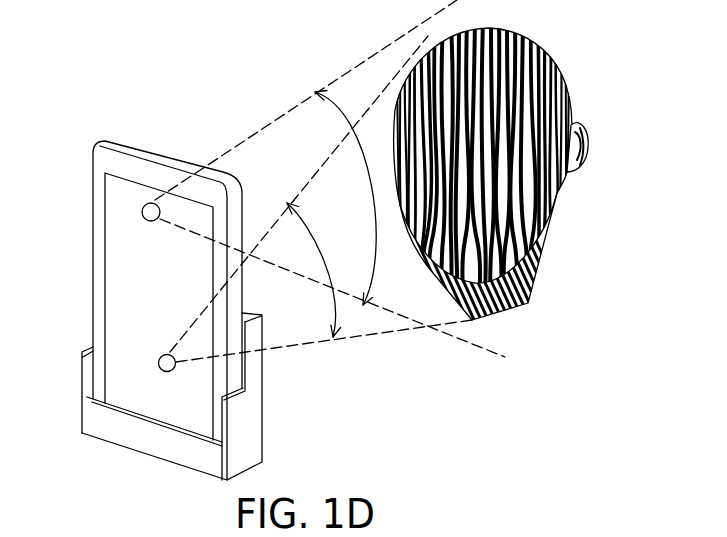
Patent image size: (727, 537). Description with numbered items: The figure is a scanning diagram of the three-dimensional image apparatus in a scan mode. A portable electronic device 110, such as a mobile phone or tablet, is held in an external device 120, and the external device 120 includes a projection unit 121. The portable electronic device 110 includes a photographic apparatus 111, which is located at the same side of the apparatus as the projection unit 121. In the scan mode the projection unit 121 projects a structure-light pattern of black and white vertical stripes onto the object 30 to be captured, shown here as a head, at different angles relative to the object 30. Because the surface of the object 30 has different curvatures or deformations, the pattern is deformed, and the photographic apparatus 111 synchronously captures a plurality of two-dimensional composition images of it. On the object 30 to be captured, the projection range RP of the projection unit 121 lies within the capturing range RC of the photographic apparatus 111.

The portable electronic device 110 is at (156, 142).
The photographic apparatus 111 is at (143, 211).
The projection unit 121 is at (160, 353).
The external device 120 is at (263, 413).
The object to be captured 30 is at (590, 154).
The capturing range RC is at (372, 207).
The projection range RP is at (330, 312).